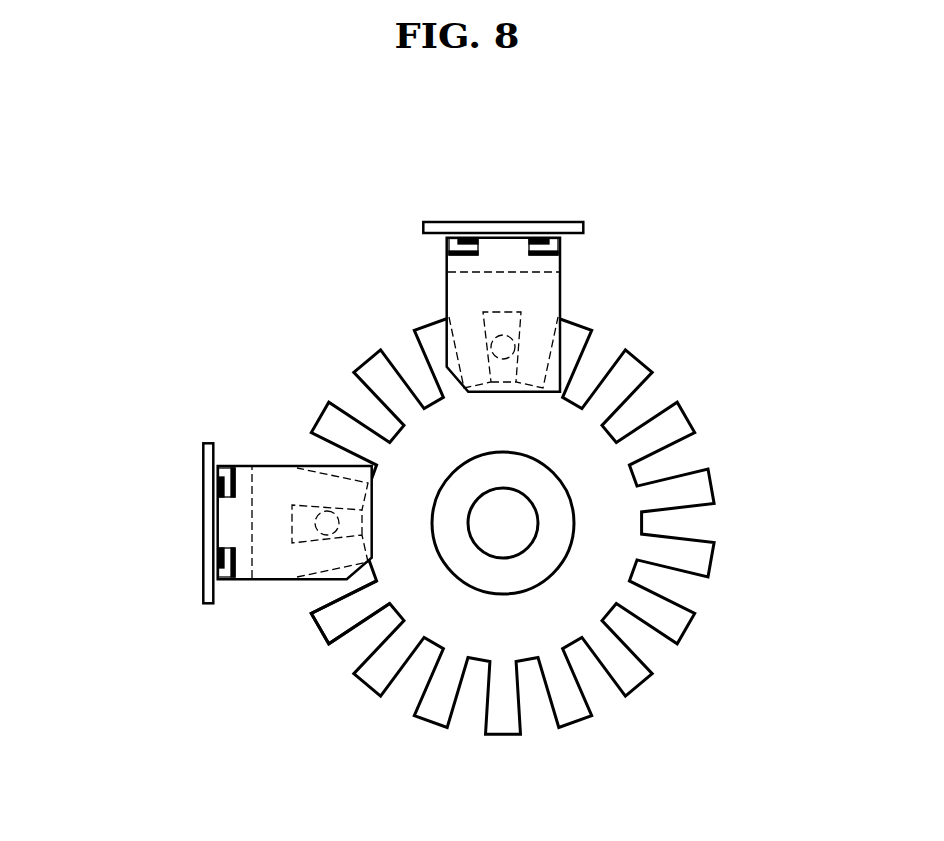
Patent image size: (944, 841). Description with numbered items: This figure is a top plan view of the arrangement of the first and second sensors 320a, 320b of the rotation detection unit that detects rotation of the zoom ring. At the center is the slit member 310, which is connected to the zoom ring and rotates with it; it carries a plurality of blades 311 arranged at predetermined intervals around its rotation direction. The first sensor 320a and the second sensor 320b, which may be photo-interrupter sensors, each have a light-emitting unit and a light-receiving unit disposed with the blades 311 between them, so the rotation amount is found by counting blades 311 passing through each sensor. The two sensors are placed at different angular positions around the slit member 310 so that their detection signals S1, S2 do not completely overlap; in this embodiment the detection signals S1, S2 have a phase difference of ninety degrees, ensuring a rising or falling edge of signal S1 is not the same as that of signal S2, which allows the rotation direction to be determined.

The slit member 310 is at (360, 685).
The blades 311 is at (315, 630).
The first sensor 320a is at (203, 538).
The second sensor 320b is at (527, 222).
The detection signal S1 is at (203, 483).
The detection signal S2 is at (474, 222).